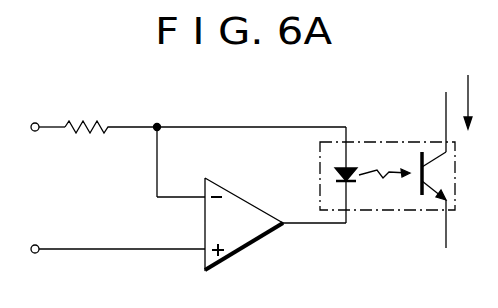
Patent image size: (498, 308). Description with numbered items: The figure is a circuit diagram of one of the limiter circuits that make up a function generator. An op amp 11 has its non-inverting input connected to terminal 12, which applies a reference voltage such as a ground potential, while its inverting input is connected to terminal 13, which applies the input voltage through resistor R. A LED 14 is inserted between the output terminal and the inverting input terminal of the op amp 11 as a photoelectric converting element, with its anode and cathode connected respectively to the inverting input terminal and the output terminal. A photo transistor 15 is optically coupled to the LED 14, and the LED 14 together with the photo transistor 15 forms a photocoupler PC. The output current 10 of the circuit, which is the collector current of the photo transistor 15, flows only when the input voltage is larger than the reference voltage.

The output current 10 is at (480, 101).
The op amp 11 is at (238, 200).
The terminal 12 is at (35, 245).
The terminal 13 is at (35, 131).
The LED 14 is at (336, 182).
The photo transistor 15 is at (419, 156).
The resistor R is at (74, 122).
The photocoupler PC is at (372, 141).